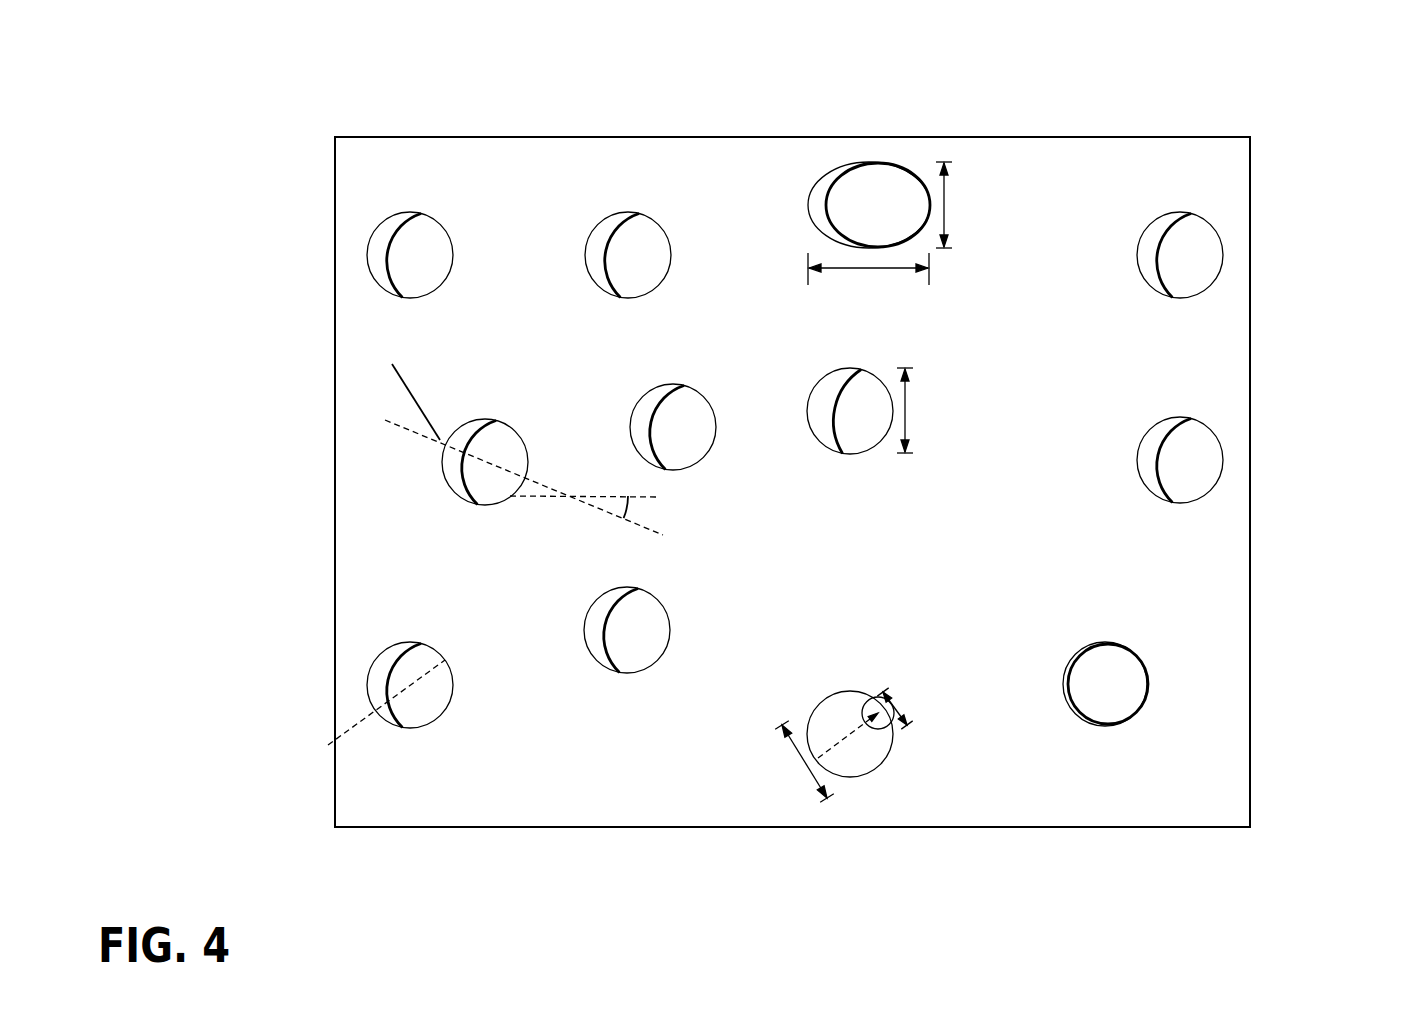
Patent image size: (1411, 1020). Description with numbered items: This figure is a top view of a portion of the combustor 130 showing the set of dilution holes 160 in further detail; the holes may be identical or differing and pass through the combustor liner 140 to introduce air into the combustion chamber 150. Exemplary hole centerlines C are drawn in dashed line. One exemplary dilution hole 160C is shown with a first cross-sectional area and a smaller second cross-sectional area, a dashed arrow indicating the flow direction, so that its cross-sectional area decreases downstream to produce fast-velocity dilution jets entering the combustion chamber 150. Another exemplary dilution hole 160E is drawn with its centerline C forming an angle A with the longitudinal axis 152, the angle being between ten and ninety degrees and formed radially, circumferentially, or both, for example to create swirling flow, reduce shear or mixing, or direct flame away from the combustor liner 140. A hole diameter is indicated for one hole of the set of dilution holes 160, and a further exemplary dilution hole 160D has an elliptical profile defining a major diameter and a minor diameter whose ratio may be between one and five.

The combustor 130 is at (1253, 163).
The combustor liner 140 is at (1200, 383).
The combustion chamber 150 is at (708, 442).
The longitudinal axis 152 is at (603, 495).
The set of dilution holes 160 is at (370, 212).
The dilution hole 160C is at (873, 768).
The dilution hole 160D is at (866, 163).
The dilution hole 160E is at (445, 480).